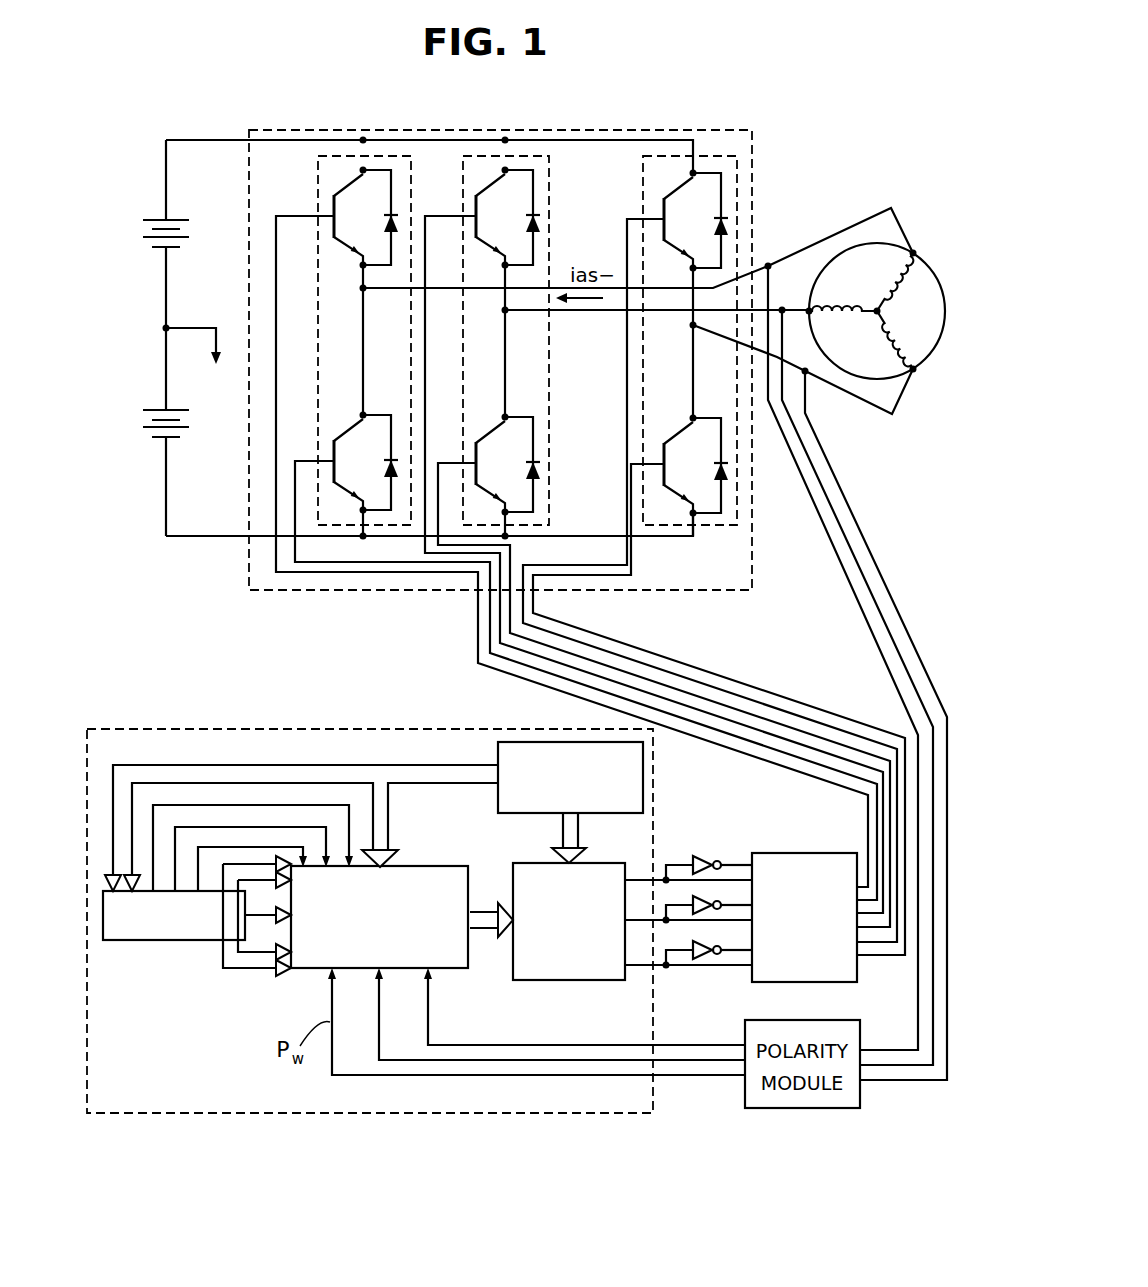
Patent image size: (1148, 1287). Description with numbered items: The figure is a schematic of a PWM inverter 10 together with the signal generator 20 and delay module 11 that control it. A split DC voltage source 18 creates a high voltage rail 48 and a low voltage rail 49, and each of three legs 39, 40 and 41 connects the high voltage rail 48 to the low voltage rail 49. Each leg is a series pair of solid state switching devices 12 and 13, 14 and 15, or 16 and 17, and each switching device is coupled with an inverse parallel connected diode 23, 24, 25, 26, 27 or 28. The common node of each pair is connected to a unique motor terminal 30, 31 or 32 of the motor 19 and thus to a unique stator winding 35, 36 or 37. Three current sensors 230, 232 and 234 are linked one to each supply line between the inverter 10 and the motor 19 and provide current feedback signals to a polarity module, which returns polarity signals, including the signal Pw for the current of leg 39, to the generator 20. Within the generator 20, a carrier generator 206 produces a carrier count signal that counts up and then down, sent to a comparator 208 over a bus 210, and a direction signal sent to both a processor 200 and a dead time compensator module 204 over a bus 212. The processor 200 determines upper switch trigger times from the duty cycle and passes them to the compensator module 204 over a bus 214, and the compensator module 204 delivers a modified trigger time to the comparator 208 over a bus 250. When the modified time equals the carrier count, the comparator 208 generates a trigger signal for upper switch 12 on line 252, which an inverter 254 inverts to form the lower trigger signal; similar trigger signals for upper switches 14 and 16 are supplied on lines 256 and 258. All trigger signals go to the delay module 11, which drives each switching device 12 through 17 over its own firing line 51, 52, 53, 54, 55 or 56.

The PWM inverter 10 is at (287, 128).
The delay module 11 is at (803, 851).
The upper switching device of first leg 12 is at (373, 177).
The lower switching device of first leg 13 is at (374, 420).
The upper switching device of second leg 14 is at (517, 176).
The lower switching device of second leg 15 is at (515, 420).
The upper switching device of third leg 16 is at (705, 178).
The lower switching device of third leg 17 is at (707, 423).
The DC voltage source 18 is at (134, 195).
The motor 19 is at (889, 295).
The signal generator 20 is at (411, 745).
The inverse parallel diode 23 is at (398, 222).
The inverse parallel diode 24 is at (376, 468).
The inverse parallel diode 25 is at (541, 226).
The inverse parallel diode 26 is at (545, 466).
The inverse parallel diode 27 is at (740, 222).
The inverse parallel diode 28 is at (705, 468).
The motor terminal 30 is at (813, 308).
The motor terminal 31 is at (916, 256).
The motor terminal 32 is at (914, 372).
The stator winding 35 is at (846, 316).
The stator winding 36 is at (886, 290).
The stator winding 37 is at (901, 333).
The first inverter leg 39 is at (332, 167).
The second inverter leg 40 is at (478, 176).
The third inverter leg 41 is at (662, 176).
The high voltage rail 48 is at (215, 140).
The low voltage rail 49 is at (325, 538).
The firing line 51 is at (355, 573).
The firing line 52 is at (398, 565).
The firing line 53 is at (428, 442).
The firing line 54 is at (440, 518).
The firing line 55 is at (567, 562).
The firing line 56 is at (635, 574).
The processor 200 is at (170, 945).
The dead time compensator module 204 is at (425, 866).
The carrier generator 206 is at (500, 750).
The comparator 208 is at (537, 980).
The bus 210 is at (580, 830).
The bus 212 is at (260, 765).
The bus 214 is at (258, 925).
The current sensor 230 is at (768, 262).
The current sensor 232 is at (784, 306).
The current sensor 234 is at (806, 375).
The bus 250 is at (488, 903).
The line 252 is at (645, 878).
The inverter 254 is at (708, 853).
The line 256 is at (640, 923).
The line 258 is at (689, 967).